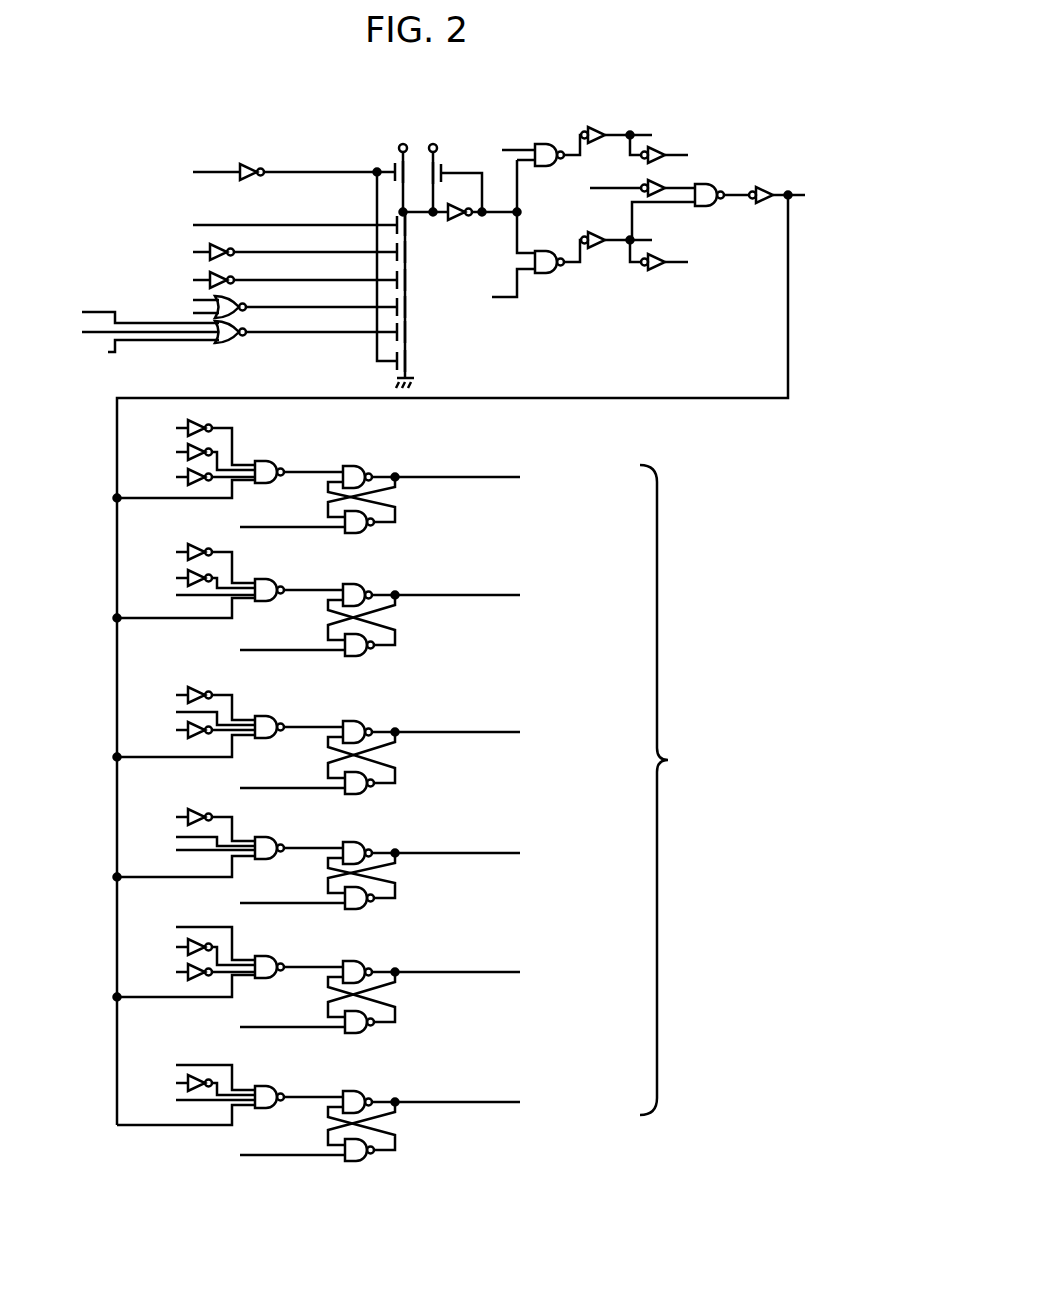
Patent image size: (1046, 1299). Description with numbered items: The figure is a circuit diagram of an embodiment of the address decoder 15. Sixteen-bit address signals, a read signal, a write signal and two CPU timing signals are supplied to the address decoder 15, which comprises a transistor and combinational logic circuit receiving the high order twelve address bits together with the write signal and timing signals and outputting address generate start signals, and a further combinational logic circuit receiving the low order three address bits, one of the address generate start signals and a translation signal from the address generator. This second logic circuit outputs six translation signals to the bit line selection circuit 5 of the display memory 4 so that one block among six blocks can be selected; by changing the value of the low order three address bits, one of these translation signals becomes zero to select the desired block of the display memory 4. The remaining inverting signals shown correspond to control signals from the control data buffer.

The address decoder 15 is at (688, 473).
The display memory 4 is at (636, 790).
The bit line selection circuit 5 is at (776, 811).